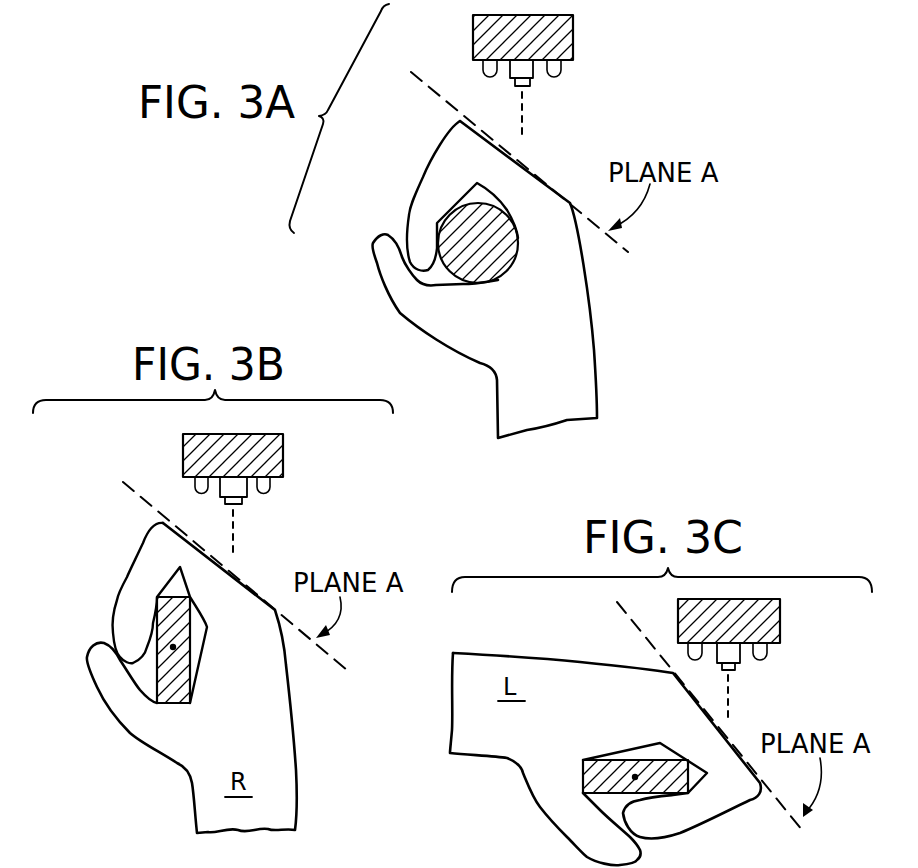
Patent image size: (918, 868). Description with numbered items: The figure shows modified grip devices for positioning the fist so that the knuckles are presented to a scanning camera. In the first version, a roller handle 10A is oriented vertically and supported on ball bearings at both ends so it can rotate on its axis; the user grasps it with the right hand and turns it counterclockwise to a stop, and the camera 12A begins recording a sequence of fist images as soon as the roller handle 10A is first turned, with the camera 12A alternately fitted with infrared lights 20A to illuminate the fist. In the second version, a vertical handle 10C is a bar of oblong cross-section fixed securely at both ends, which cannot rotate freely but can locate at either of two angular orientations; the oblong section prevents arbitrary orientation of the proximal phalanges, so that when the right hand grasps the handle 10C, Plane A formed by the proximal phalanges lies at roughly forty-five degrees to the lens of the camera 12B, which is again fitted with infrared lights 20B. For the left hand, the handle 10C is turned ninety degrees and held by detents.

In FIG. 3A, the camera 12A is at (488, 33).
In FIG. 3A, the infrared lights 20A is at (483, 66).
In FIG. 3A, the roller handle 10A is at (468, 279).
In FIG. 3B, the camera 12B is at (272, 458).
In FIG. 3B, the infrared lights 20B is at (193, 487).
In FIG. 3B, the vertical handle 10C is at (163, 628).
In FIG. 3C, the vertical handle 10C is at (603, 777).